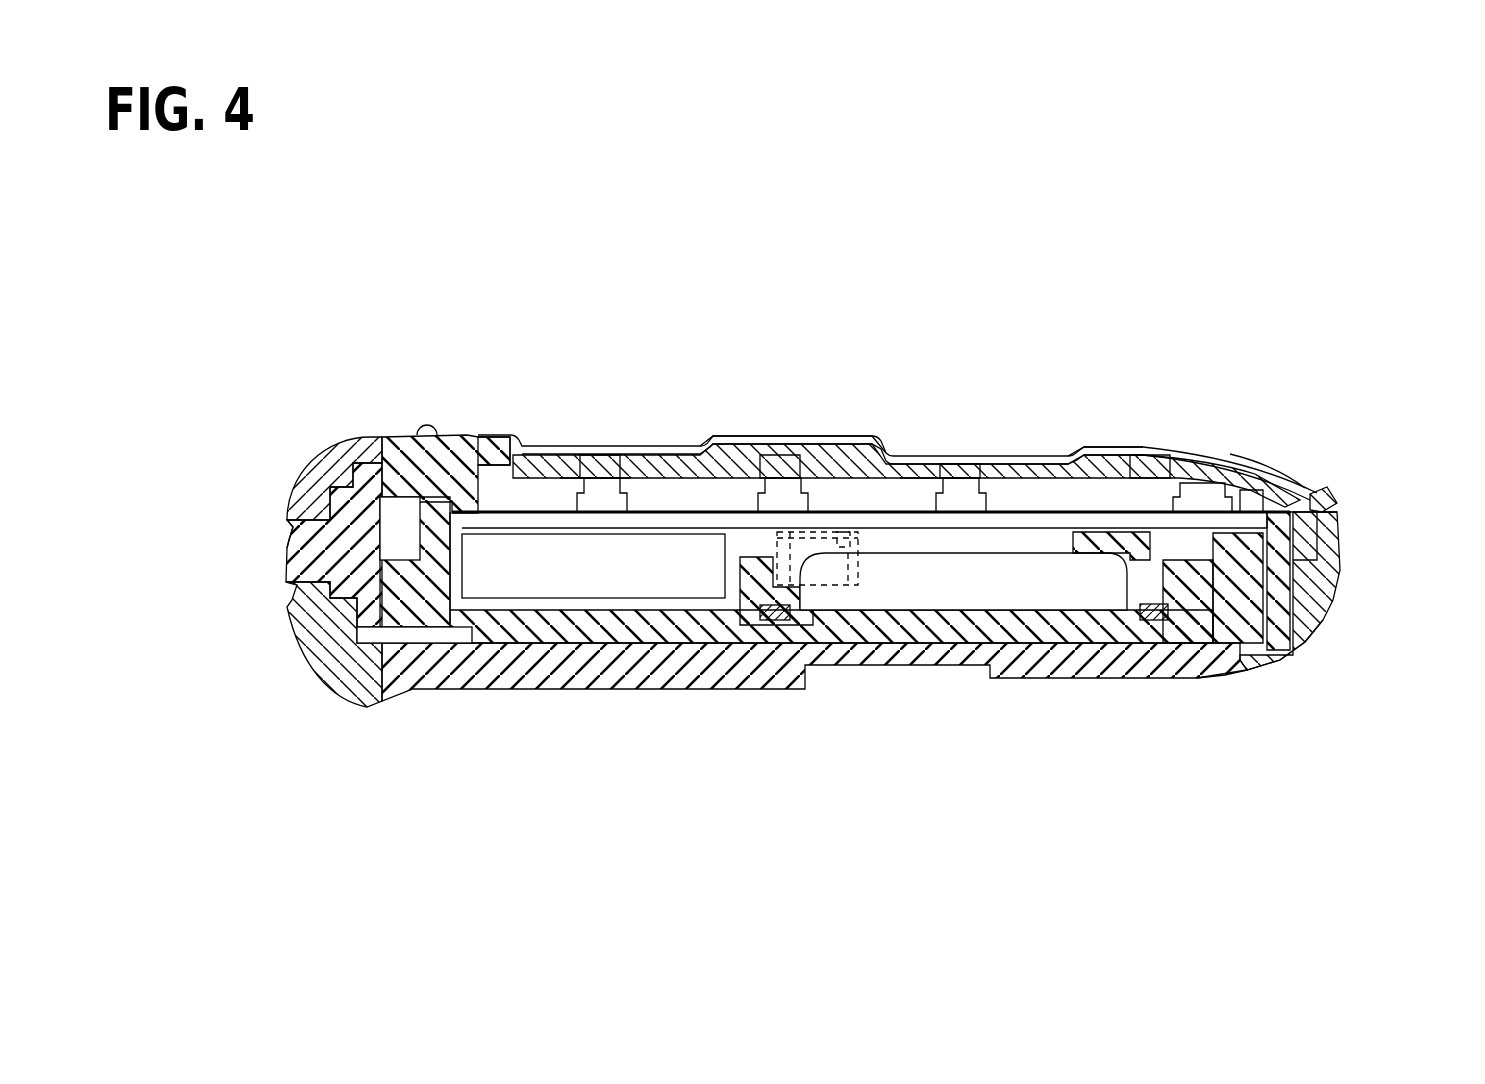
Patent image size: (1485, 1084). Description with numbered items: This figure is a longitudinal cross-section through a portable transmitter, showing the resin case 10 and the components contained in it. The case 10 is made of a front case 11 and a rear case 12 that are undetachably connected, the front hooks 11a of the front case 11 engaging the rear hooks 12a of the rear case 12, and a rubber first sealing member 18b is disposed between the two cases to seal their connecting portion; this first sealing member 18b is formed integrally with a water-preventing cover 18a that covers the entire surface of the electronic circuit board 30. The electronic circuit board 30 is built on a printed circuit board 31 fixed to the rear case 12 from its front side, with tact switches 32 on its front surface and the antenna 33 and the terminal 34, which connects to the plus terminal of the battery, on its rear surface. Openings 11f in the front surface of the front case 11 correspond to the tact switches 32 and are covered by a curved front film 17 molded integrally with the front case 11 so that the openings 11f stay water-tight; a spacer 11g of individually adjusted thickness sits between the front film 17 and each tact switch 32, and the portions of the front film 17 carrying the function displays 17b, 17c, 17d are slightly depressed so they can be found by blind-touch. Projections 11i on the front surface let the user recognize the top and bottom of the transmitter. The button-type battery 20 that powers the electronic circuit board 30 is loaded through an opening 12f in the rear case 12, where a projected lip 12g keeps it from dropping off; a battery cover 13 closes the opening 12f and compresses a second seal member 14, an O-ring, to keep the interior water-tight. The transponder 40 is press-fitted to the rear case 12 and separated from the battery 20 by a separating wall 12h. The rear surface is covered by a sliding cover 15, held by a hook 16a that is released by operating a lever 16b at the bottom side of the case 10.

The case 10 is at (1420, 527).
The front case 11 is at (315, 469).
The front hooks 11a is at (1320, 513).
The openings 11f is at (667, 455).
The spacer 11g is at (610, 472).
The projections 11i is at (400, 434).
The rear case 12 is at (395, 578).
The rear hooks 12a is at (1290, 660).
The opening 12f is at (840, 620).
The projected lip 12g is at (790, 628).
The separating wall 12h is at (1193, 625).
The battery cover 13 is at (1013, 628).
The second seal member 14 is at (767, 620).
The sliding cover 15 is at (623, 678).
The hook 16a is at (368, 632).
The lever 16b is at (290, 548).
The front film 17 is at (563, 438).
The function display 17b is at (1267, 483).
The function display 17c is at (936, 478).
The function display 17d is at (593, 478).
The water-preventing cover 18a is at (1206, 484).
The first sealing member 18b is at (427, 483).
The battery 20 is at (933, 587).
The electronic circuit board 30 is at (1150, 500).
The printed circuit board 31 is at (1047, 522).
The tact switches 32 is at (1035, 508).
The antenna 33 is at (543, 572).
The terminal 34 is at (848, 600).
The transponder 40 is at (1252, 627).